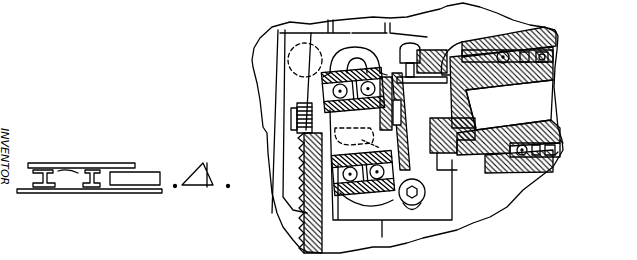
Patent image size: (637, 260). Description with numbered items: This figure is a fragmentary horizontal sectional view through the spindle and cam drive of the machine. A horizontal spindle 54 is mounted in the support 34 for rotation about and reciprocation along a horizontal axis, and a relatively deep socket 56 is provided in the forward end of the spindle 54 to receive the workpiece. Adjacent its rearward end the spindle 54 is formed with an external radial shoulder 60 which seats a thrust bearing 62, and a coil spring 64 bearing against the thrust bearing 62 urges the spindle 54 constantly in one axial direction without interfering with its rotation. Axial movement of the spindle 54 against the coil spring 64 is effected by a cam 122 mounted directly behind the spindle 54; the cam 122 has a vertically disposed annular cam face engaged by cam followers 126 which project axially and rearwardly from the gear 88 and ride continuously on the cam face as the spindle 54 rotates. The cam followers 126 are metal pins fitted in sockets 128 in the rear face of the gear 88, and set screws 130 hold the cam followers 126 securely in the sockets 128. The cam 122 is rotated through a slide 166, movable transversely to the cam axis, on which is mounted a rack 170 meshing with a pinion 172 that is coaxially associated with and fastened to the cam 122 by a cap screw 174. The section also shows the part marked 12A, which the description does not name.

The bearing cap 12A is at (337, 67).
The cam 122 is at (380, 68).
The set screw 130 is at (413, 43).
The gear 88 is at (437, 48).
The cam follower 126 is at (462, 50).
The socket 128 is at (445, 60).
The support 34 is at (556, 34).
The socket 56 is at (547, 92).
The spindle 54 is at (558, 125).
The coil spring 64 is at (563, 143).
The thrust bearing 62 is at (558, 152).
The external radial shoulder 60 is at (553, 166).
The rack 170 is at (300, 103).
The pinion 172 is at (298, 117).
The cap screw 174 is at (297, 140).
The slide 166 is at (303, 236).